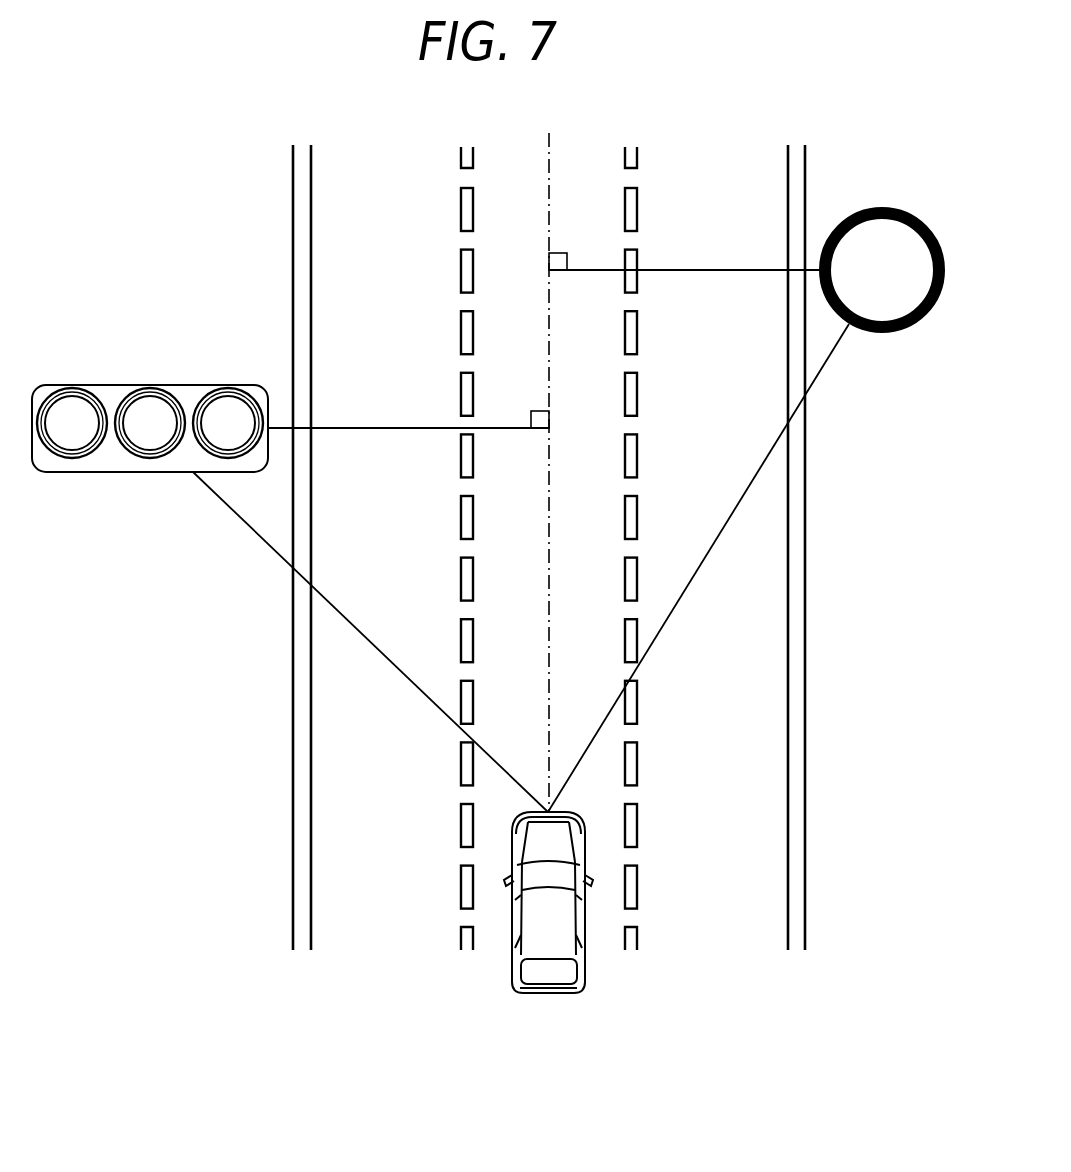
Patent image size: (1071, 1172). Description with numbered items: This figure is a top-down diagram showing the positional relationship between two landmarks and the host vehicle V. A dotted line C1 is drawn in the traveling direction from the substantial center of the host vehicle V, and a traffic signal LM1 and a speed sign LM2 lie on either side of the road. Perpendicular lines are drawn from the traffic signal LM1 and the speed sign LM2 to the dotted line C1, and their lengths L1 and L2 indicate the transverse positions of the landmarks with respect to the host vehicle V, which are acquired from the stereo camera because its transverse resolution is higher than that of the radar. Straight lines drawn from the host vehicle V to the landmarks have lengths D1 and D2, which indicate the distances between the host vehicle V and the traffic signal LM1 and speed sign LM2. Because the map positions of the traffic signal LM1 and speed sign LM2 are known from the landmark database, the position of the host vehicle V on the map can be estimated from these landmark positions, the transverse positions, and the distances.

The traffic signal LM1 is at (186, 385).
The speed sign LM2 is at (878, 207).
The dotted line C1 is at (551, 157).
The length of perpendicular line from traffic signal L1 is at (408, 411).
The length of perpendicular line from speed sign L2 is at (684, 253).
The length of straight line to traffic signal D1 is at (370, 642).
The length of straight line to speed sign D2 is at (698, 568).
The host vehicle V is at (548, 995).